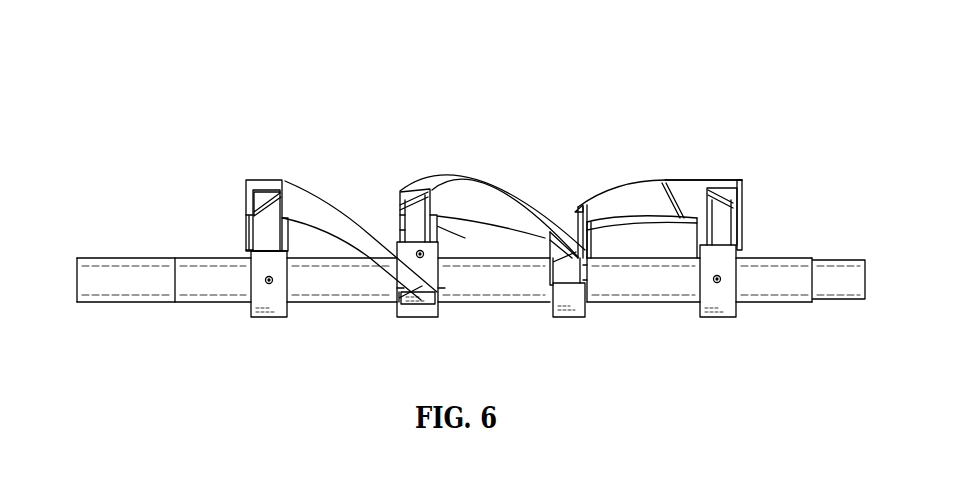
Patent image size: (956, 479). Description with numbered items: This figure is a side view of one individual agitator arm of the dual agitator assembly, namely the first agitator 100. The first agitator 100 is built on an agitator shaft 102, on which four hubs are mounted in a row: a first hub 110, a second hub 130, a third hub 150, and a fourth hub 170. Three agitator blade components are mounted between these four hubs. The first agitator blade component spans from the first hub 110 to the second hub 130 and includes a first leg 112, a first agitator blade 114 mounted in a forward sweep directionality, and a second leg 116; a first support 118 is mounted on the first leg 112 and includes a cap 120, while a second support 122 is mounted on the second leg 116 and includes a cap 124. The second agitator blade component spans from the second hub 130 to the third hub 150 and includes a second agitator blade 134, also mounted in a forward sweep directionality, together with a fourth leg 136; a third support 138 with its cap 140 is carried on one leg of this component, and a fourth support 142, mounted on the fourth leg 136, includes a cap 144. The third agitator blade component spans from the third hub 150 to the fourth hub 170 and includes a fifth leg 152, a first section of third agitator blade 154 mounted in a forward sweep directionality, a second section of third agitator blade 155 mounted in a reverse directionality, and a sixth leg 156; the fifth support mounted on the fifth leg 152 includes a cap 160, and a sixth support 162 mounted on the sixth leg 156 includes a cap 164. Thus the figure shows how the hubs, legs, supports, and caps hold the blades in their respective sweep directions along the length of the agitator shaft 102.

The first agitator 100 is at (157, 118).
The agitator shaft 102 is at (143, 303).
The first hub 110 is at (258, 318).
The first leg 112 is at (248, 246).
The first agitator blade 114 is at (301, 181).
The second leg 116 is at (428, 317).
The first support 118 is at (246, 220).
The cap 120 is at (246, 183).
The second support 122 is at (397, 288).
The cap 124 is at (397, 298).
The second hub 130 is at (410, 318).
The second agitator blade 134 is at (494, 180).
The fourth leg 136 is at (583, 275).
The third support 138 is at (398, 228).
The cap 140 is at (402, 192).
The fourth support 142 is at (552, 282).
The cap 144 is at (548, 262).
The third hub 150 is at (565, 318).
The fifth leg 152 is at (585, 228).
The first section of third agitator blade 154 is at (632, 180).
The second section of third agitator blade 155 is at (680, 180).
The sixth leg 156 is at (745, 237).
The cap 160 is at (565, 210).
The sixth support 162 is at (740, 212).
The cap 164 is at (738, 186).
The fourth hub 170 is at (717, 318).